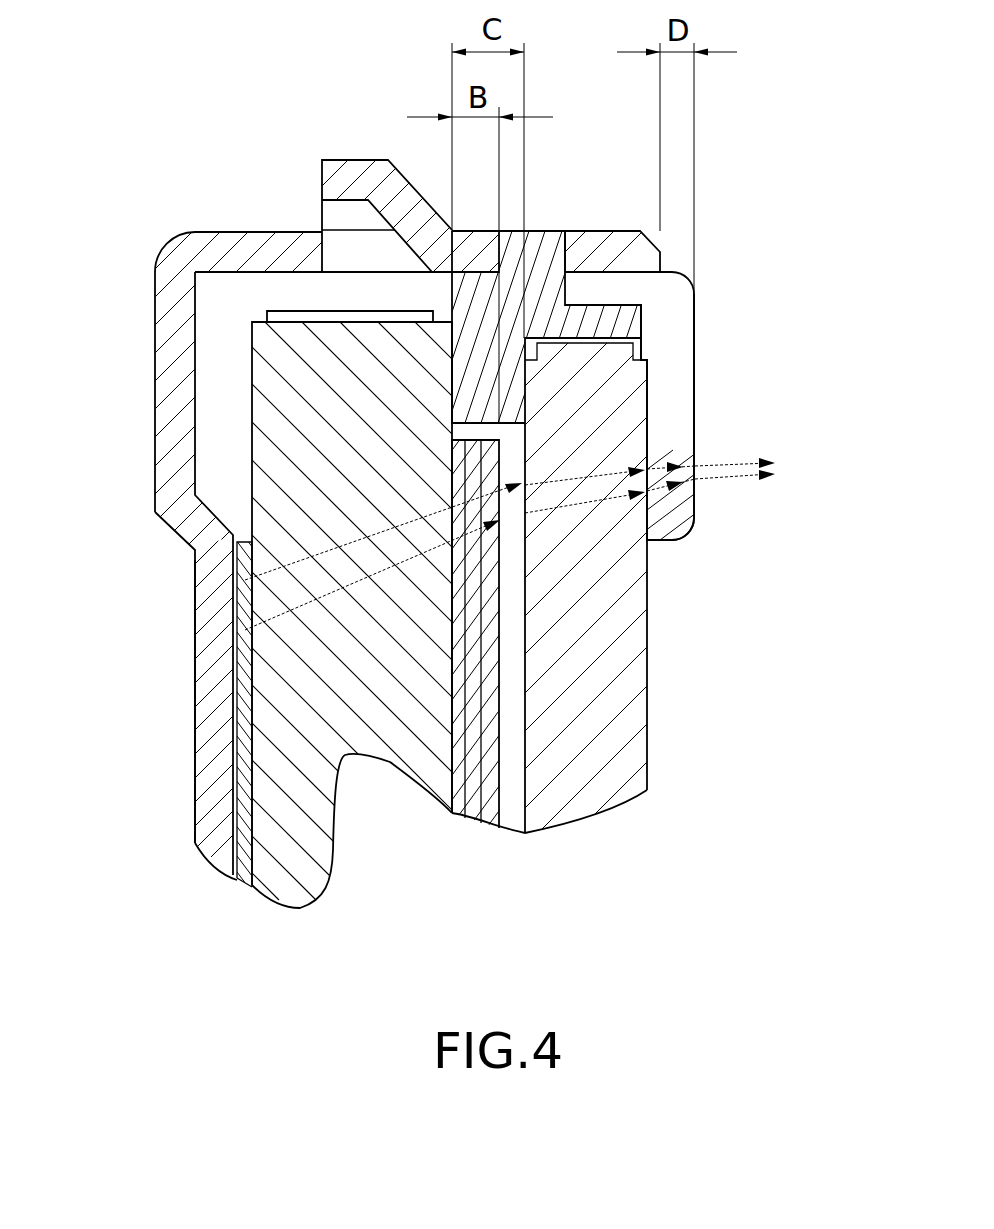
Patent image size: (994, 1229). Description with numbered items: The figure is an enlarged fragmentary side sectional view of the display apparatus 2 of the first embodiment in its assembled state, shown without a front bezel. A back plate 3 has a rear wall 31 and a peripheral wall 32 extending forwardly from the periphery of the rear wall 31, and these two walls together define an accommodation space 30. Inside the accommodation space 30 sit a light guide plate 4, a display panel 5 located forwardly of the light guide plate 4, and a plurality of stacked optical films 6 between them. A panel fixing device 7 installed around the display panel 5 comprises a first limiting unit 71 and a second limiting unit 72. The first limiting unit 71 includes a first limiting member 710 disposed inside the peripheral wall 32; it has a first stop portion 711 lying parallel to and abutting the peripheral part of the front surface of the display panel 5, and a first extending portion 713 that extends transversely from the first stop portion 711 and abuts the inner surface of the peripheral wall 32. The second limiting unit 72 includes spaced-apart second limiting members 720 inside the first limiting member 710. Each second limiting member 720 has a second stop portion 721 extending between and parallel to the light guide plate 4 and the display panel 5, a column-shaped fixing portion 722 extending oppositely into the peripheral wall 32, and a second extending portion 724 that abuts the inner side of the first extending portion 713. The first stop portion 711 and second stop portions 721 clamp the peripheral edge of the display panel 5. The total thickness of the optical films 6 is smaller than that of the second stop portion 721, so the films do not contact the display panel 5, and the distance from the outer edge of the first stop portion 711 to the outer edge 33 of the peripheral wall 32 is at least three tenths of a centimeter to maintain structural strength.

The display apparatus 2 is at (135, 248).
The back plate 3 is at (178, 637).
The accommodation space 30 is at (208, 323).
The rear wall 31 is at (193, 763).
The peripheral wall 32 is at (217, 242).
The outer edge 33 is at (663, 260).
The light guide plate 4 is at (315, 882).
The display panel 5 is at (593, 800).
The stacked optical films 6 is at (473, 822).
The panel fixing device 7 is at (745, 280).
The first limiting unit 71 is at (715, 433).
The first limiting member 710 is at (717, 517).
The first stop portion 711 is at (697, 393).
The first extending portion 713 is at (628, 285).
The second limiting unit 72 is at (667, 321).
The second limiting member 720 is at (445, 433).
The second stop portion 721 is at (475, 395).
The fixing portion 722 is at (538, 240).
The second extending portion 724 is at (607, 325).